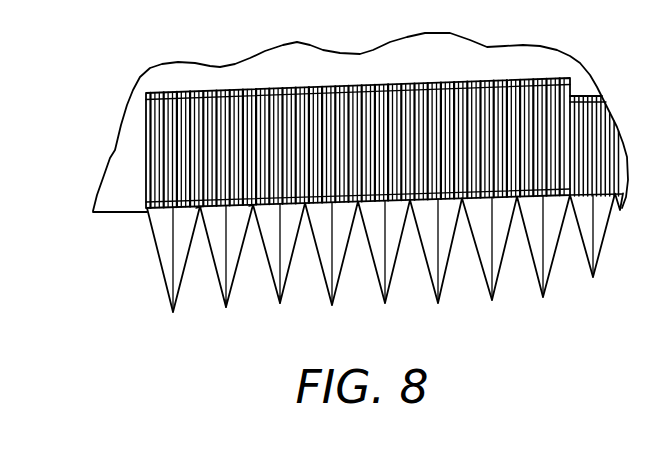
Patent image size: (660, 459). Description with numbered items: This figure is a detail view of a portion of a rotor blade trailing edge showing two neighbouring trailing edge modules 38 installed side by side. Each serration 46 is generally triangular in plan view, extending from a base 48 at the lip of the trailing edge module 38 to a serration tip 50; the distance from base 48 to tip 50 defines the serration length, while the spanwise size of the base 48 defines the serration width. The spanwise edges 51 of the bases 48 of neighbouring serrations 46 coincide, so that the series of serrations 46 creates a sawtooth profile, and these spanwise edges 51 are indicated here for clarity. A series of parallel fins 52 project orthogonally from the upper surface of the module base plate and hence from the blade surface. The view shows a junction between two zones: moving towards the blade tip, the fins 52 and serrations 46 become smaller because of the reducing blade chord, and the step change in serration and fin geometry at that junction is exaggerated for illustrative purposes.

The trailing edge module 38 is at (386, 72).
The serration 46 is at (340, 264).
The base 48 is at (162, 218).
The serration tip 50 is at (280, 304).
The spanwise edge 51 is at (253, 220).
The fin 52 is at (187, 112).